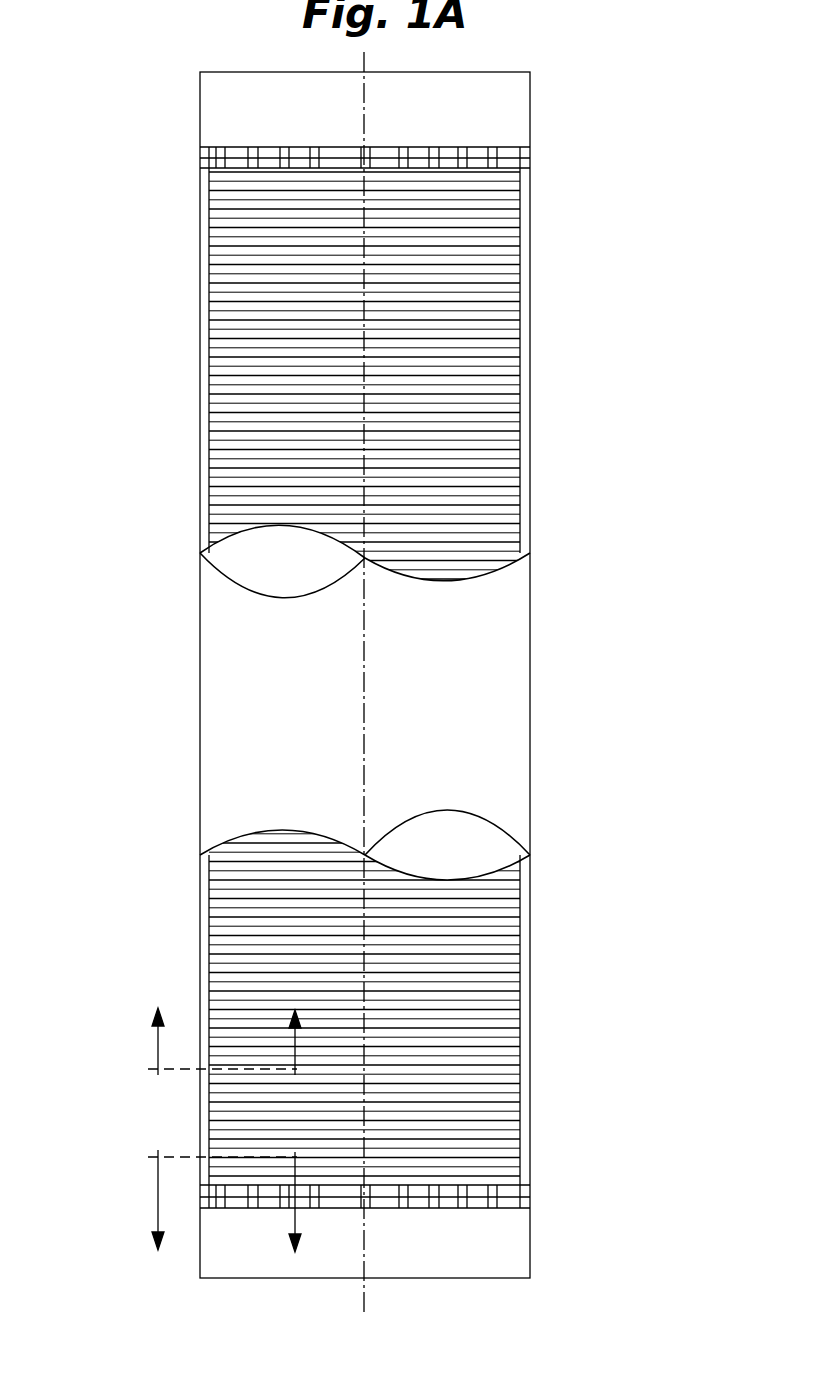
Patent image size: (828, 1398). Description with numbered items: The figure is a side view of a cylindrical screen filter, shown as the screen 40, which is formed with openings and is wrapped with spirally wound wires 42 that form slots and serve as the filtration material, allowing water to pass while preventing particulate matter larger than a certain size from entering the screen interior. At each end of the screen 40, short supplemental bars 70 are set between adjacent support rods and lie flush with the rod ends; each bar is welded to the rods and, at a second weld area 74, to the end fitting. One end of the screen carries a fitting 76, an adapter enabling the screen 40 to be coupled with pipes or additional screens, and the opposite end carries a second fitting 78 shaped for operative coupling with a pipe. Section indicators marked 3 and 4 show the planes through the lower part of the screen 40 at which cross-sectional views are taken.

The screen 40 is at (567, 99).
The wires 42 is at (226, 357).
The supplemental bars 70 is at (432, 168).
The second weld area 74 is at (249, 1208).
The fitting 76 is at (530, 1255).
The second fitting 78 is at (201, 110).
The section line 3- 3 is at (224, 1030).
The section line 4- 4 is at (224, 1212).